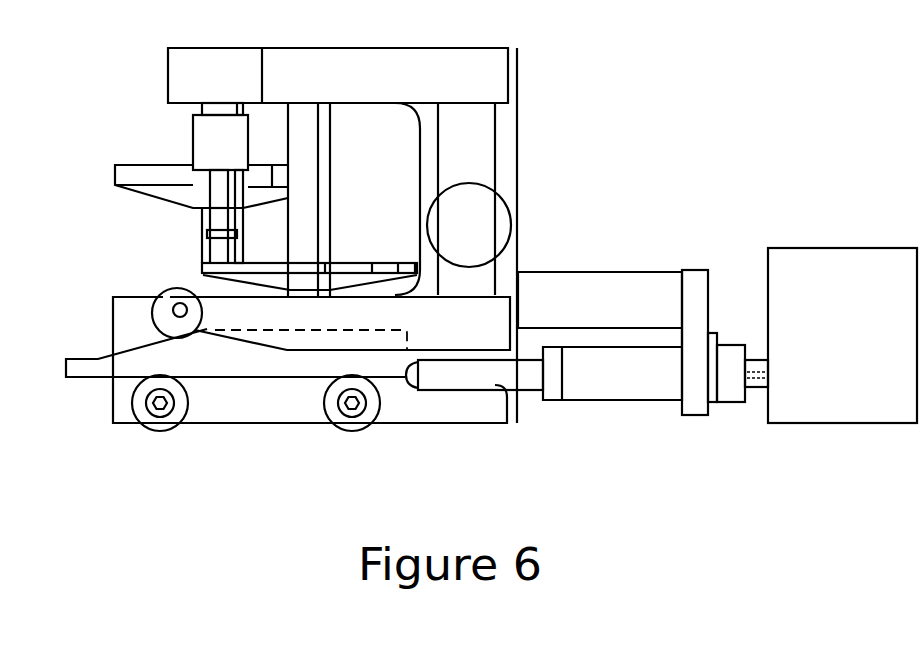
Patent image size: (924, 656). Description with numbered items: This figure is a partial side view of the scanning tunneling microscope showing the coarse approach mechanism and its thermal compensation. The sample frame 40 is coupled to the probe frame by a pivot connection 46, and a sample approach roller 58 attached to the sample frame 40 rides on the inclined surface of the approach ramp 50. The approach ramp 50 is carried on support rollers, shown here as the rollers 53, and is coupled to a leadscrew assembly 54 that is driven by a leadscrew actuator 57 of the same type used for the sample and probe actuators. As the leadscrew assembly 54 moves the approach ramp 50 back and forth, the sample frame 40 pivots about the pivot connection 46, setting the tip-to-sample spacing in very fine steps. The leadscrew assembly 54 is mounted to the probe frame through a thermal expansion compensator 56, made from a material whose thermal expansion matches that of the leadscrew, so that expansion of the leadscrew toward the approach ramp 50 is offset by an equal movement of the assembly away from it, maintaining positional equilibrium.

The sample frame 40 is at (340, 323).
The pivot connection 46 is at (499, 217).
The approach ramp 50 is at (137, 350).
The wheels 53 is at (167, 425).
The leadscrew assembly 54 is at (495, 385).
The thermal expansion compensator 56 is at (640, 278).
The leadscrew actuator 57 is at (863, 412).
The sample approach roller 58 is at (178, 288).